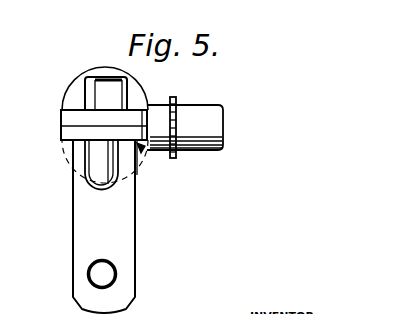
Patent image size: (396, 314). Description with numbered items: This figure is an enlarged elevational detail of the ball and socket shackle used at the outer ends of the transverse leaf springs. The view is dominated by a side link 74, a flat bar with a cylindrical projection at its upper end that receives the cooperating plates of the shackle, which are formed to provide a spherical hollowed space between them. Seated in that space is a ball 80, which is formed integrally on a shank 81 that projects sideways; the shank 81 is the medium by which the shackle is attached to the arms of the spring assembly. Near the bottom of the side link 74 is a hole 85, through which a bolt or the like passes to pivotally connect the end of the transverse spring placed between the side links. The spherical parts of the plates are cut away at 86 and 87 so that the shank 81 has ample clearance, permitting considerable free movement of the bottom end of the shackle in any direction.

The side link 74 is at (100, 210).
The ball 80 is at (118, 93).
The shank 81 is at (197, 113).
The hole 85 is at (202, 272).
The cut away 86 is at (130, 102).
The cut away 87 is at (142, 152).